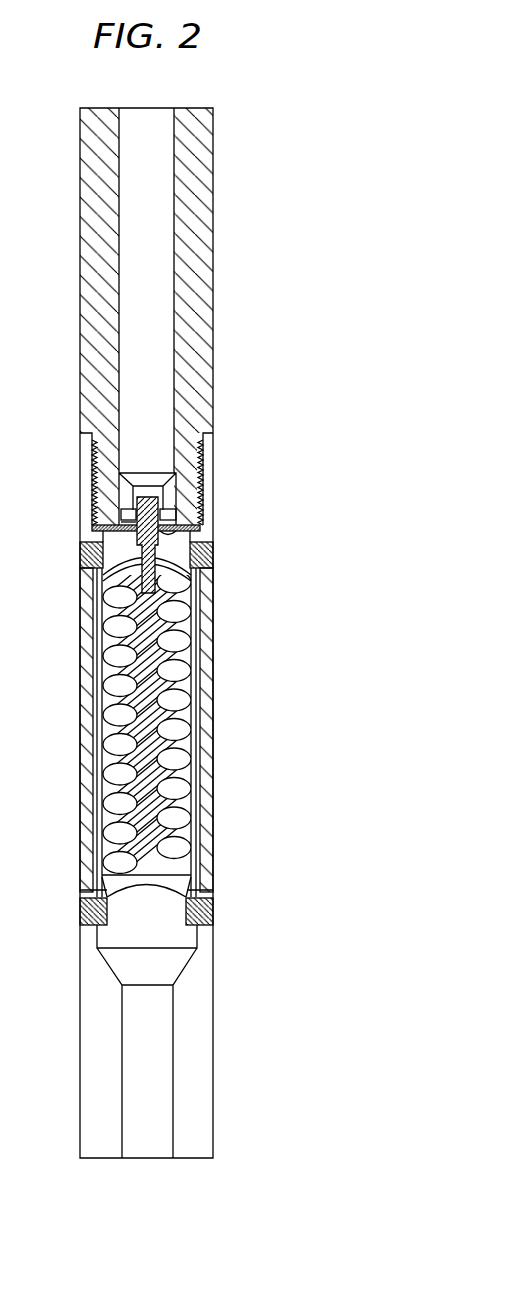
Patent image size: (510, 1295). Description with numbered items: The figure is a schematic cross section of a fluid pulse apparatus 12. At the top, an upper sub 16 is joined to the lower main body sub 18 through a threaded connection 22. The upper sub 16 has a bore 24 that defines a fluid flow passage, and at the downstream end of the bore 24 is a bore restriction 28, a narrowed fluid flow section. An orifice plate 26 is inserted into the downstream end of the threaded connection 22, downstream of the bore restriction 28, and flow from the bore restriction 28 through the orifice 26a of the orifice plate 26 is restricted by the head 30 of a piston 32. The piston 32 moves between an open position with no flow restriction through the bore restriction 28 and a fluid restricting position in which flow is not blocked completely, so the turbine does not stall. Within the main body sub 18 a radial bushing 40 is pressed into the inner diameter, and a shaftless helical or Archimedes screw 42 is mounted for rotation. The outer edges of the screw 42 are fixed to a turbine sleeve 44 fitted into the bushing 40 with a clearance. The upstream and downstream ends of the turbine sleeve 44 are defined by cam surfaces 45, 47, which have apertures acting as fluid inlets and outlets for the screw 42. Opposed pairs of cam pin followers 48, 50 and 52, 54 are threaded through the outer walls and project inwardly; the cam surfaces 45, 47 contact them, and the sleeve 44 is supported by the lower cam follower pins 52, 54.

The fluid pulse apparatus 12 is at (342, 601).
The upper sub 16 is at (205, 223).
The main body sub 18 is at (249, 753).
The threaded connection 22 is at (202, 460).
The bore 24 is at (167, 323).
The orifice plate 26 is at (200, 530).
The orifice 26a is at (168, 527).
The bore restriction 28 is at (145, 489).
The head 30 is at (130, 512).
The piston 32 is at (125, 497).
The radial bushing 40 is at (205, 643).
The helical screw 42 is at (180, 607).
The turbine sleeve 44 is at (197, 893).
The upper cam surface 45 is at (102, 570).
The lower cam surface 47 is at (137, 893).
The cam pin follower 48 is at (83, 558).
The cam pin follower 50 is at (213, 558).
The cam pin follower 52 is at (82, 912).
The cam pin follower 54 is at (210, 912).